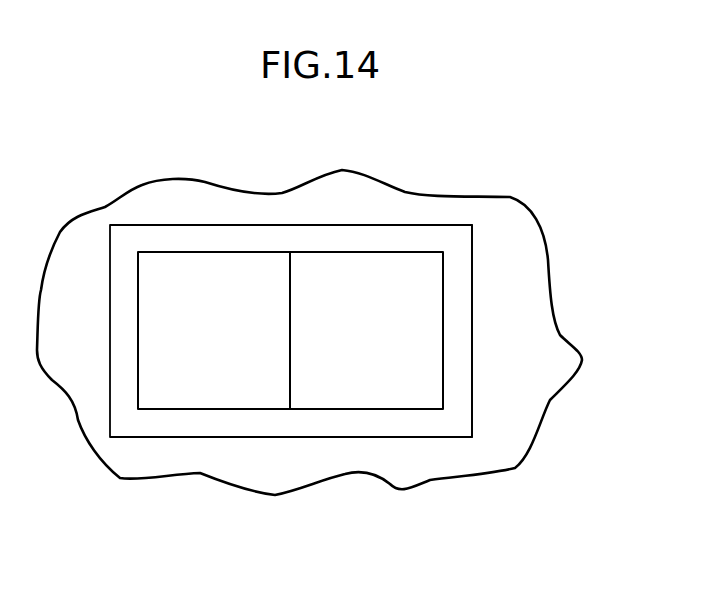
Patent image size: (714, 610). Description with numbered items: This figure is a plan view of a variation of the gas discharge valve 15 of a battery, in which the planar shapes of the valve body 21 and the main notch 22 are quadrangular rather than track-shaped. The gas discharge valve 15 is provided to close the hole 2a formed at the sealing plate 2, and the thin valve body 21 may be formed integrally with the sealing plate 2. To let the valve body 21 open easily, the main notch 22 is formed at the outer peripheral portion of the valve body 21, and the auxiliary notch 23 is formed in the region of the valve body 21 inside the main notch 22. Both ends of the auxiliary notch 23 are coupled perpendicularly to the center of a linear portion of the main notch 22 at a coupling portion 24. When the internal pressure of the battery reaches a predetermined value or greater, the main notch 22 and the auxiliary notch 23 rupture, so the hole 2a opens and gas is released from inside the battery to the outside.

The sealing plate 2 is at (545, 322).
The hole 2a is at (472, 259).
The gas discharge valve 15 is at (434, 224).
The valve body 21 is at (190, 272).
The main notch 22 is at (343, 252).
The auxiliary notch 23 is at (290, 305).
The coupling portion 24 is at (290, 252).